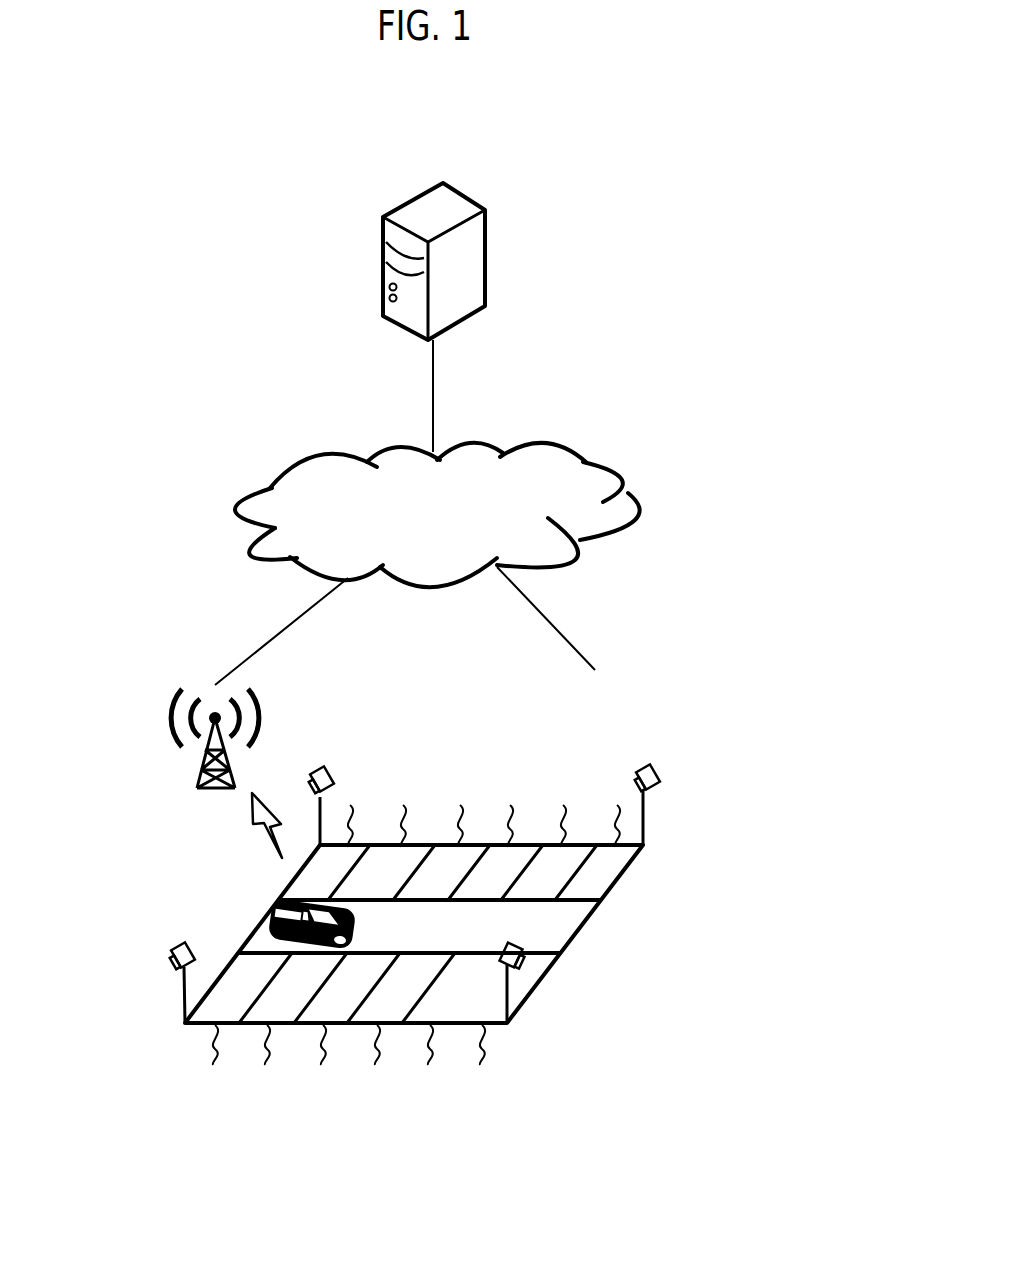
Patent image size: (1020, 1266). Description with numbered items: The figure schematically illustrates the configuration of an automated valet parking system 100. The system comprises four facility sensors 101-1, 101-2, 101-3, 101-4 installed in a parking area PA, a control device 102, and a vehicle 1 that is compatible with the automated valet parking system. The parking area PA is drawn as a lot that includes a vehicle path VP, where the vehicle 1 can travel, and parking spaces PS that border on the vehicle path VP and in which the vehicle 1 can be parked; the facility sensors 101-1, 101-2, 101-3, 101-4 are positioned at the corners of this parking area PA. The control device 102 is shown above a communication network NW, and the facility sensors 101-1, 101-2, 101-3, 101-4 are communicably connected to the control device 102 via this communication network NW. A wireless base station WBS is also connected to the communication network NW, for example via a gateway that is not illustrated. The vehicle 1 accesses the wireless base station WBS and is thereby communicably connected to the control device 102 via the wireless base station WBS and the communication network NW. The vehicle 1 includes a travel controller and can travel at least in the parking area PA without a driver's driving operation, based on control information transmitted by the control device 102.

The automated valet parking system 100 is at (725, 228).
The control device 102 is at (470, 205).
The communication network NW is at (628, 495).
The wireless base station WBS is at (195, 788).
The parking area PA is at (697, 752).
The parking spaces PS is at (640, 803).
The vehicle path VP is at (560, 928).
The vehicle 1 is at (270, 934).
The facility sensor 101-1 is at (642, 767).
The facility sensor 101-2 is at (522, 967).
The facility sensor 101-3 is at (175, 968).
The facility sensor 101-4 is at (328, 768).